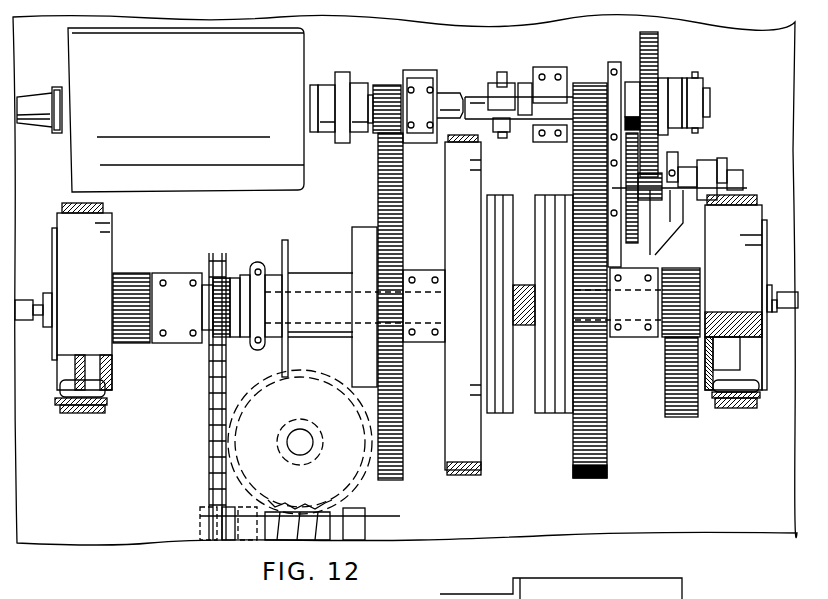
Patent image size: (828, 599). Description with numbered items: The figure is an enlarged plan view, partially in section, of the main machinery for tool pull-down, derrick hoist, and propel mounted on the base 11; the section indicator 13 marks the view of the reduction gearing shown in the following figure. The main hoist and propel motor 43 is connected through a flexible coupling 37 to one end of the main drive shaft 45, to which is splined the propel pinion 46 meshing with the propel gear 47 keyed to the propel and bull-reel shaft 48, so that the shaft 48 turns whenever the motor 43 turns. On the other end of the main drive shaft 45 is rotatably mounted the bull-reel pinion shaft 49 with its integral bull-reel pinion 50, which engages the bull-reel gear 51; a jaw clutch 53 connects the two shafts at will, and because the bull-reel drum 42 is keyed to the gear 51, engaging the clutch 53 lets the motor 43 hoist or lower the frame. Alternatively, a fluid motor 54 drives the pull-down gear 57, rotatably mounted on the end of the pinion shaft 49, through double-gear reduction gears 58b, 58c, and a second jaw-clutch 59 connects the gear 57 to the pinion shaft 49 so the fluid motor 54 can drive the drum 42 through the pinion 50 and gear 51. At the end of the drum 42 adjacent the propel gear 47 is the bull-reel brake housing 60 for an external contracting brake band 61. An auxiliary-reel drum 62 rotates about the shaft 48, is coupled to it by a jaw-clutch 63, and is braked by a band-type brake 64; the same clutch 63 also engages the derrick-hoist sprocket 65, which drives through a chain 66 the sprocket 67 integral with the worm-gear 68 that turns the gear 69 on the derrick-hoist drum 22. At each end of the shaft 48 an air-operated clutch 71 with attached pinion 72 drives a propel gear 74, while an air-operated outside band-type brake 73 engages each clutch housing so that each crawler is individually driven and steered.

The base 11 is at (112, 523).
The Figure 13 section indicator 13 is at (747, 185).
The derrick-hoist drum 22 is at (328, 468).
The flexible coupling 37 is at (345, 72).
The bull-reel drum 42 is at (555, 405).
The main hoist and propel motor 43 is at (140, 100).
The main drive shaft 45 is at (452, 93).
The propel pinion 46 is at (388, 85).
The propel gear 47 is at (378, 178).
The propel and bull-reel shaft 48 is at (312, 290).
The bull-reel pinion shaft 49 is at (525, 83).
The bull-reel pinion 50 is at (590, 83).
The bull-reel gear 51 is at (608, 447).
The jaw clutch 53 is at (498, 75).
The fluid motor 54 is at (723, 166).
The pull-down gear 57 is at (658, 47).
The double-gear reduction gear 58b is at (630, 115).
The double-gear reduction gear 58c is at (663, 185).
The second jaw-clutch 59 is at (693, 78).
The bull-reel brake housing 60 is at (462, 370).
The brake band 61 is at (448, 470).
The auxiliary-reel drum 62 is at (317, 310).
The jaw-clutch 63 is at (268, 283).
The band-type brake 64 is at (367, 243).
The derrick-hoist sprocket 65 is at (203, 300).
The chain 66 is at (210, 428).
The sprocket 67 is at (217, 522).
The worm-gear 68 is at (330, 517).
The gear 69 is at (298, 487).
The air-operated clutch 71 is at (92, 250).
The pinion 72 is at (132, 290).
The outside band-type brake 73 is at (68, 415).
The propel gear 74 is at (677, 373).